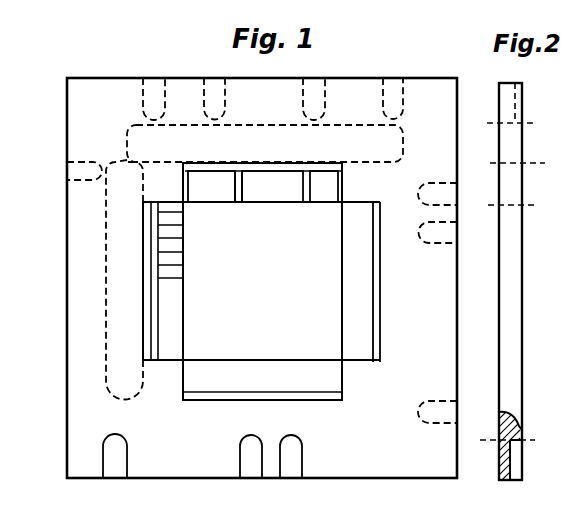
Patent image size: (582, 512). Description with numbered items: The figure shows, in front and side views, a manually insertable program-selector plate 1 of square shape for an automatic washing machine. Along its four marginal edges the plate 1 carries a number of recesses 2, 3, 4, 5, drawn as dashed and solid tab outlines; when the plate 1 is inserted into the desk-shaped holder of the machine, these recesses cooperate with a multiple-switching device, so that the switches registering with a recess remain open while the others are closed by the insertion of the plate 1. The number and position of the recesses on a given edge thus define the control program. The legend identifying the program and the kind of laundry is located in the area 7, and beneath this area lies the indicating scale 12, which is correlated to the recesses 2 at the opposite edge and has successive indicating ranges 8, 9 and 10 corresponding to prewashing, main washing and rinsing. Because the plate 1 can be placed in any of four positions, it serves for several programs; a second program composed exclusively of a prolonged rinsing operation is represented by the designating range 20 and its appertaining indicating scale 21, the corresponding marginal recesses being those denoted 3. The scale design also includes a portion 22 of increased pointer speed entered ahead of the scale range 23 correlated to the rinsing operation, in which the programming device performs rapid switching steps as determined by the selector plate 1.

In FIG. 1, the selector plate 1 is at (66, 308).
In FIG. 2, the selector plate 1 is at (513, 300).
In FIG. 1, the marginal recesses 2 is at (249, 471).
In FIG. 2, the marginal recesses 2 is at (522, 466).
In FIG. 1, the marginal recesses 3 is at (450, 415).
In FIG. 1, the marginal recesses 4 is at (148, 100).
In FIG. 2, the marginal recesses 4 is at (523, 110).
In FIG. 1, the marginal recess 5 is at (76, 163).
In FIG. 1, the designation area 7 is at (250, 127).
In FIG. 2, the designation area 7 is at (523, 151).
In FIG. 1, the indicating range 8 is at (221, 202).
In FIG. 1, the indicating range 9 is at (277, 202).
In FIG. 2, the indicating range 9 is at (523, 196).
In FIG. 1, the indicating range 10 is at (327, 203).
In FIG. 1, the indicating scale 12 is at (238, 202).
In FIG. 1, the designating range 20 is at (104, 241).
In FIG. 1, the indicating scale 21 is at (152, 278).
In FIG. 1, the portion of increased speed 22 is at (176, 330).
In FIG. 1, the scale range 23 is at (186, 242).